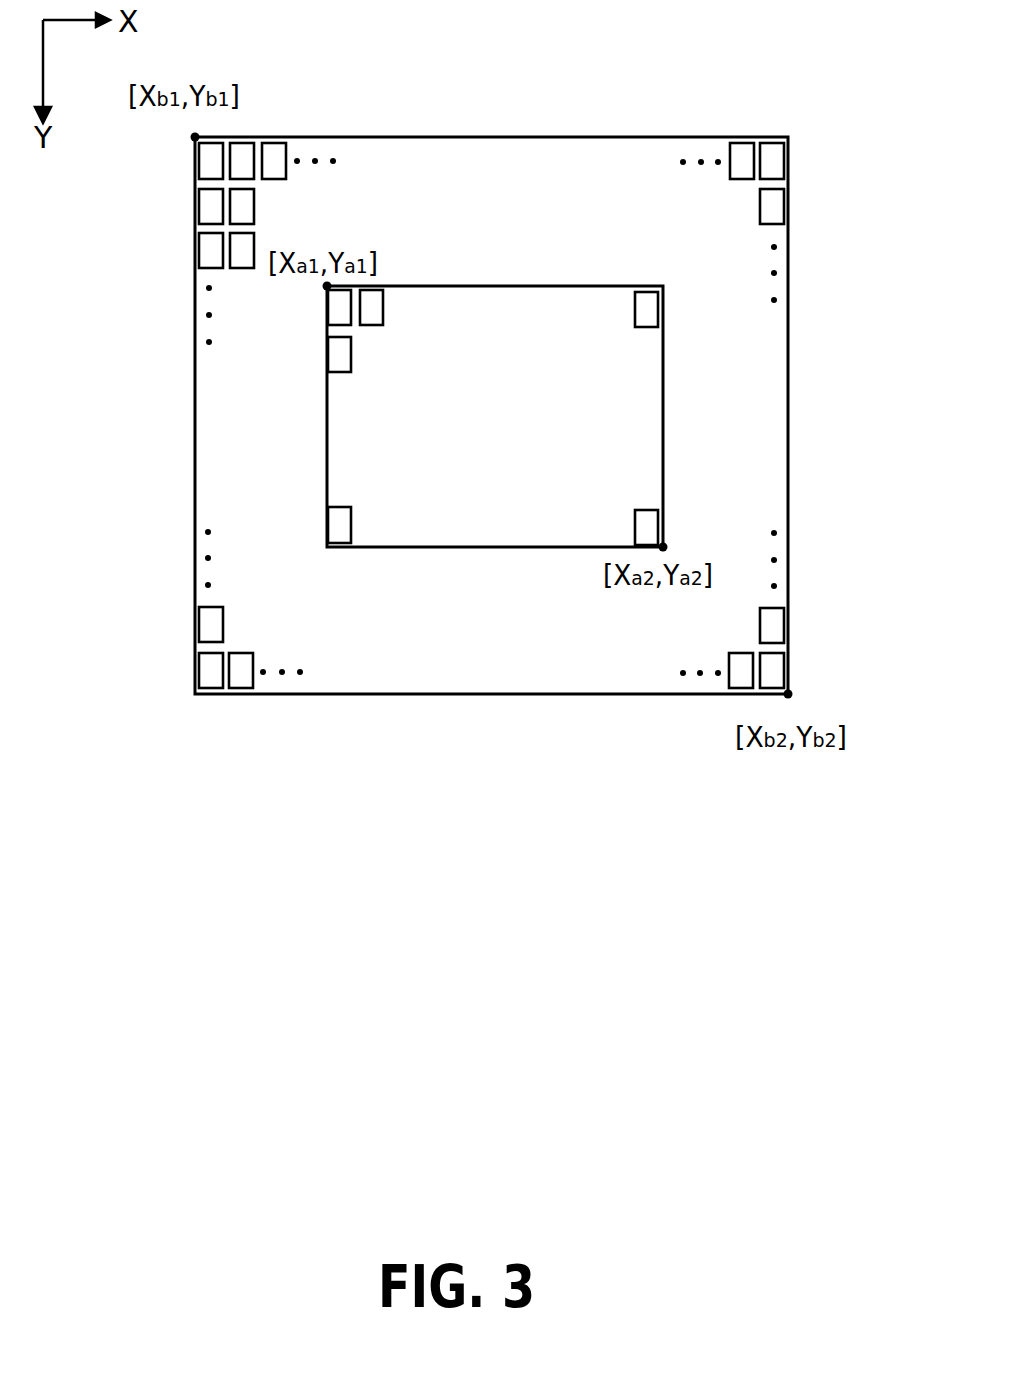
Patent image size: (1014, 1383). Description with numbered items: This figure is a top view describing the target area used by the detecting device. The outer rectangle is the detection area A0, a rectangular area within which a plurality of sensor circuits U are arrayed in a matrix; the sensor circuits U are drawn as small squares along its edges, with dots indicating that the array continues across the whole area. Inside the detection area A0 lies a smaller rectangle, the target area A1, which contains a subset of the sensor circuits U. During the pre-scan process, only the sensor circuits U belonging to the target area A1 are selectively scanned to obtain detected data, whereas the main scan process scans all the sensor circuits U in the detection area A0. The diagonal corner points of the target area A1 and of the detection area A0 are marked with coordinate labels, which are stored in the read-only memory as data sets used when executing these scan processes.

The detection area A0 is at (788, 388).
The target area A1 is at (663, 427).
The sensor circuit U is at (212, 162).